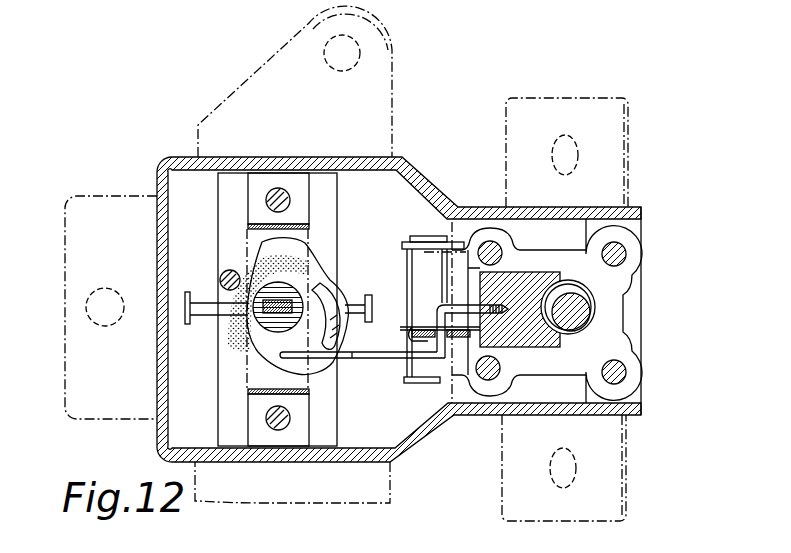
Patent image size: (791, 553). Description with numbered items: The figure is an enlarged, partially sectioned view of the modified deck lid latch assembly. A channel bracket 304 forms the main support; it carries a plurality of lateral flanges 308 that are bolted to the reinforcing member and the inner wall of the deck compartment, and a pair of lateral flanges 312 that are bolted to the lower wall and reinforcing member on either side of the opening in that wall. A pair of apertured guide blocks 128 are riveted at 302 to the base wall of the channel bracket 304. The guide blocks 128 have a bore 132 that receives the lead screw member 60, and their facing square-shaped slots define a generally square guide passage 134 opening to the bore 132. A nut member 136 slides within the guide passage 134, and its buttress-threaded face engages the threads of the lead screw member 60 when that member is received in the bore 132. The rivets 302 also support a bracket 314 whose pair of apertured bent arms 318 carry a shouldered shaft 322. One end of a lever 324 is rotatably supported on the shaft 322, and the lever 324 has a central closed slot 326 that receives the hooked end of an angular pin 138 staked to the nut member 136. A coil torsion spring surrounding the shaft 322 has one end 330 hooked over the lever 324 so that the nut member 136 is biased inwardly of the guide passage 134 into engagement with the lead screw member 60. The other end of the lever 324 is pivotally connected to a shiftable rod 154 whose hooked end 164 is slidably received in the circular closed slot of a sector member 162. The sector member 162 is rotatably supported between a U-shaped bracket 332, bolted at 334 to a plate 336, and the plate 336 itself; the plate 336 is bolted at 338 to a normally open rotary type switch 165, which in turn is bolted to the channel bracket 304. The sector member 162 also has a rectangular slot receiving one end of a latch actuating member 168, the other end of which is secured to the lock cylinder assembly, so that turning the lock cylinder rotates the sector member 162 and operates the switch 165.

The channel bracket 304 is at (421, 163).
The lateral flanges 308 is at (238, 85).
The lateral flanges 312 is at (556, 98).
The plate 336 is at (233, 175).
The U-shaped bracket 332 is at (314, 180).
The bolts 334 is at (277, 180).
The bolts 338 is at (222, 274).
The sector member 162 is at (305, 292).
The hooked end 164 is at (314, 363).
The latch actuating member 168 is at (280, 313).
The rotary type switch 165 is at (233, 322).
The spring end 330 is at (362, 344).
The shiftable rod 154 is at (352, 360).
The angular pin 138 is at (461, 309).
The apertured bent arms 318 is at (407, 243).
The shouldered shaft 322 is at (451, 247).
The lever 324 is at (433, 340).
The central closed slot 326 is at (427, 341).
The bracket 314 is at (480, 229).
The nut member 136 is at (535, 347).
The guide passage 134 is at (533, 273).
The lead screw member 60 is at (586, 299).
The bore 132 is at (596, 331).
The guide blocks 128 is at (623, 302).
The rivets 302 is at (628, 251).